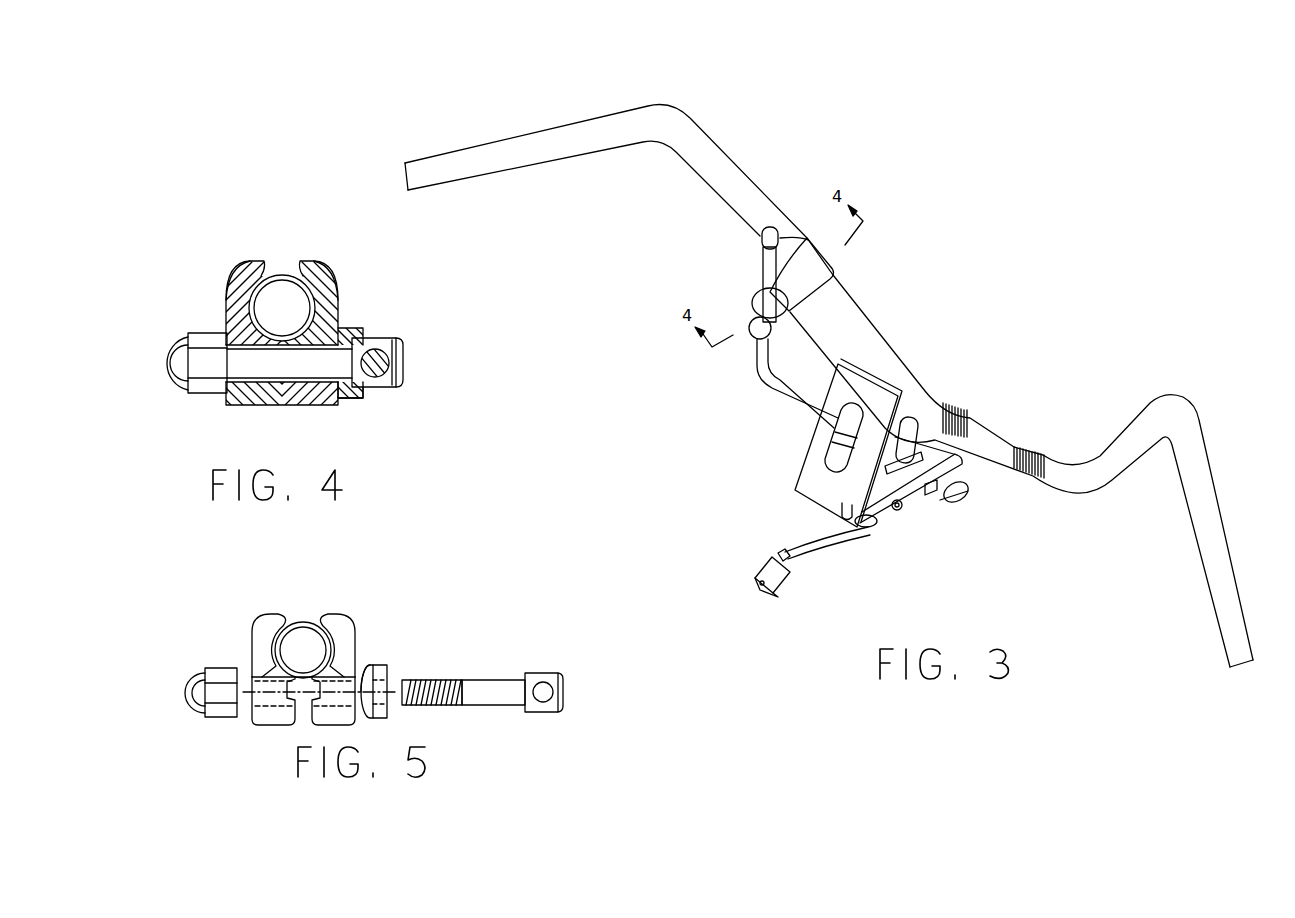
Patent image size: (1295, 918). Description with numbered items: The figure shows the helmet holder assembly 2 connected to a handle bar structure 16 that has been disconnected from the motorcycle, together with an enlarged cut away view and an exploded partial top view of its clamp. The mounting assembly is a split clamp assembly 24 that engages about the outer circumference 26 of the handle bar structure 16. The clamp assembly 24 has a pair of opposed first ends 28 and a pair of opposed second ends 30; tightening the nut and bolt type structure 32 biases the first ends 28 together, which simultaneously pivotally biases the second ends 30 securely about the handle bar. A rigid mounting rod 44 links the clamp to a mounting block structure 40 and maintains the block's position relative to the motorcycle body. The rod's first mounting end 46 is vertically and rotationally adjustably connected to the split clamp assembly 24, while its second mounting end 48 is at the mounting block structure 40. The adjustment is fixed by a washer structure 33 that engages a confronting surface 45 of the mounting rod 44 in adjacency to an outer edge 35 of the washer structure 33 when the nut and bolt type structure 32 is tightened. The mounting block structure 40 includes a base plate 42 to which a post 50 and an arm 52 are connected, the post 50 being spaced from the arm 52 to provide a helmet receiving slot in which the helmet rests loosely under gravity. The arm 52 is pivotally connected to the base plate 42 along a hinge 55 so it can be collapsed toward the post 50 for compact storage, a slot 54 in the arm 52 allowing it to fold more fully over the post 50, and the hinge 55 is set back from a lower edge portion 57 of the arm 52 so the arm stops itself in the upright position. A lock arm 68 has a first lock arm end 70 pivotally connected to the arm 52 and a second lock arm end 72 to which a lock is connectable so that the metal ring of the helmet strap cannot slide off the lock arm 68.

In FIG. 3, the helmet holder assembly 2 is at (970, 244).
In FIG. 3, the handle bar structure 16 is at (716, 160).
In FIG. 3, the split clamp assembly 24 is at (813, 186).
In FIG. 4, the split clamp assembly 24 is at (138, 308).
In FIG. 4, the outer circumference 26 is at (283, 272).
In FIG. 5, the outer circumference 26 is at (300, 627).
In FIG. 4, the pair of opposed first ends 28 is at (232, 408).
In FIG. 4, the pair of opposed second ends 30 is at (240, 280).
In FIG. 4, the nut and bolt type structure 32 is at (135, 372).
In FIG. 5, the nut and bolt type structure 32 is at (161, 715).
In FIG. 4, the washer structure 33 is at (341, 320).
In FIG. 5, the washer structure 33 is at (372, 667).
In FIG. 4, the outer edge 35 is at (364, 398).
In FIG. 5, the outer edge 35 is at (398, 668).
In FIG. 3, the mounting block structure 40 is at (948, 517).
In FIG. 3, the base plate 42 is at (953, 455).
In FIG. 3, the mounting rod 44 is at (742, 401).
In FIG. 4, the mounting rod 44 is at (380, 350).
In FIG. 4, the confronting surface 45 is at (380, 387).
In FIG. 3, the first mounting end 46 is at (733, 260).
In FIG. 3, the second mounting end 48 is at (991, 517).
In FIG. 3, the post 50 is at (913, 423).
In FIG. 3, the arm 52 is at (823, 443).
In FIG. 3, the slot 54 is at (830, 463).
In FIG. 3, the hinge 55 is at (900, 511).
In FIG. 3, the lower edge portion 57 is at (930, 505).
In FIG. 3, the lock arm 68 is at (813, 548).
In FIG. 3, the first lock arm end 70 is at (868, 517).
In FIG. 3, the second lock arm end 72 is at (748, 547).